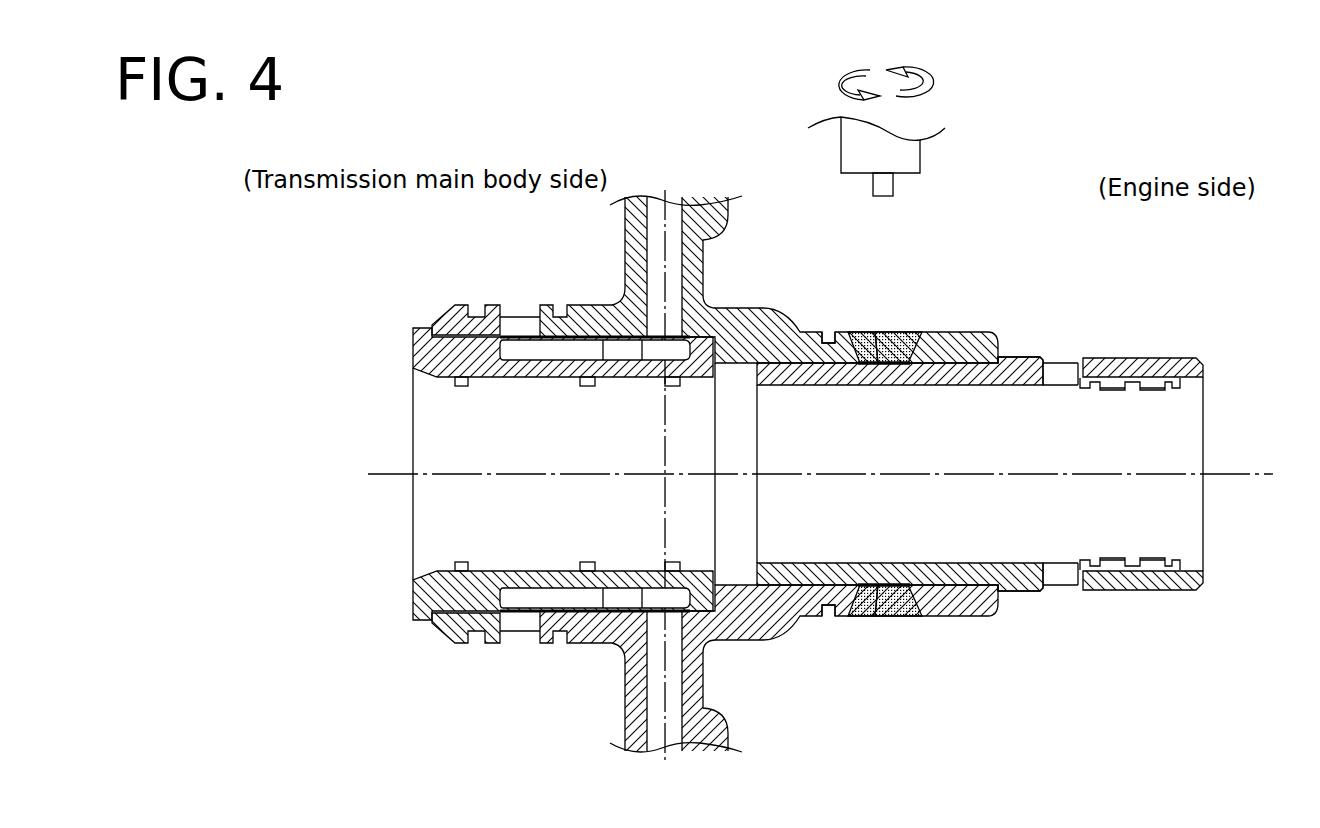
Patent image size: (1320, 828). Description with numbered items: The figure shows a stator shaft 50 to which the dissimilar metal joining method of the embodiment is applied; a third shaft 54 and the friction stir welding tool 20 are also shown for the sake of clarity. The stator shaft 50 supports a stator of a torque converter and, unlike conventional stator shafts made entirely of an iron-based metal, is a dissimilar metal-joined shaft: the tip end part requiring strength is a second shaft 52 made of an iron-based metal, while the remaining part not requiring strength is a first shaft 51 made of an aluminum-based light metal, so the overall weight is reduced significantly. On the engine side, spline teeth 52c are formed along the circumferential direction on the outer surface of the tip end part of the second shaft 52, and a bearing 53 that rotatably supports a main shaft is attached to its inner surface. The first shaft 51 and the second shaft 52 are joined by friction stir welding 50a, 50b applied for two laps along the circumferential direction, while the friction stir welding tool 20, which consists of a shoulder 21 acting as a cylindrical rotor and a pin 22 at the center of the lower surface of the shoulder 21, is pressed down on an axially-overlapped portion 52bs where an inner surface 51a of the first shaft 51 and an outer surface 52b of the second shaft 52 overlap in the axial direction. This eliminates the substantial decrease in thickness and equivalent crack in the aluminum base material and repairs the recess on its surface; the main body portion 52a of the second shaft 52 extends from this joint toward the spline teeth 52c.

The stator shaft 50 is at (754, 86).
The first shaft 51 is at (766, 300).
The inner surface of the first shaft 51a is at (718, 372).
The second shaft 52 is at (985, 413).
The shaft main portion 52a is at (998, 386).
The outer surface of the second shaft 52b is at (1040, 355).
The axially-overlapped portion 52bs is at (826, 346).
The spline teeth 52c is at (1150, 357).
The bearing 53 is at (1143, 391).
The third shaft 54 is at (540, 372).
The friction stir welding 50a is at (863, 364).
The friction stir welding 50b is at (905, 364).
The friction stir welding tool 20 is at (932, 151).
The shoulder 21 is at (922, 150).
The pin 22 is at (895, 180).